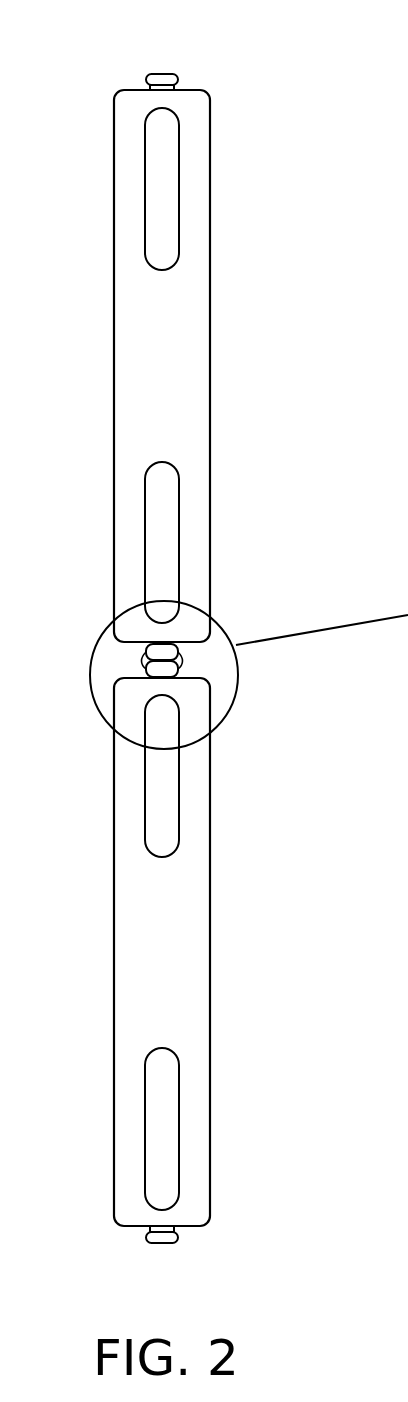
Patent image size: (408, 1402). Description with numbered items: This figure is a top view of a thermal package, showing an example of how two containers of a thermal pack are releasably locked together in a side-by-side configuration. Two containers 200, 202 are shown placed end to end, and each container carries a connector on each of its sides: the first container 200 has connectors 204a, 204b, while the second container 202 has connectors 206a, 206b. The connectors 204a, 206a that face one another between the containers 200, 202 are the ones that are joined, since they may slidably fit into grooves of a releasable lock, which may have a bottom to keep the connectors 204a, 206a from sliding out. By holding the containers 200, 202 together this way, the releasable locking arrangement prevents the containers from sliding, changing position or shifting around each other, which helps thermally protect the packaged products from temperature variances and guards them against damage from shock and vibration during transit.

The container 200 is at (114, 200).
The container 202 is at (114, 880).
The connector 204a is at (163, 80).
The connector 204b is at (167, 163).
The connector 206a is at (176, 668).
The connector 206b is at (167, 805).